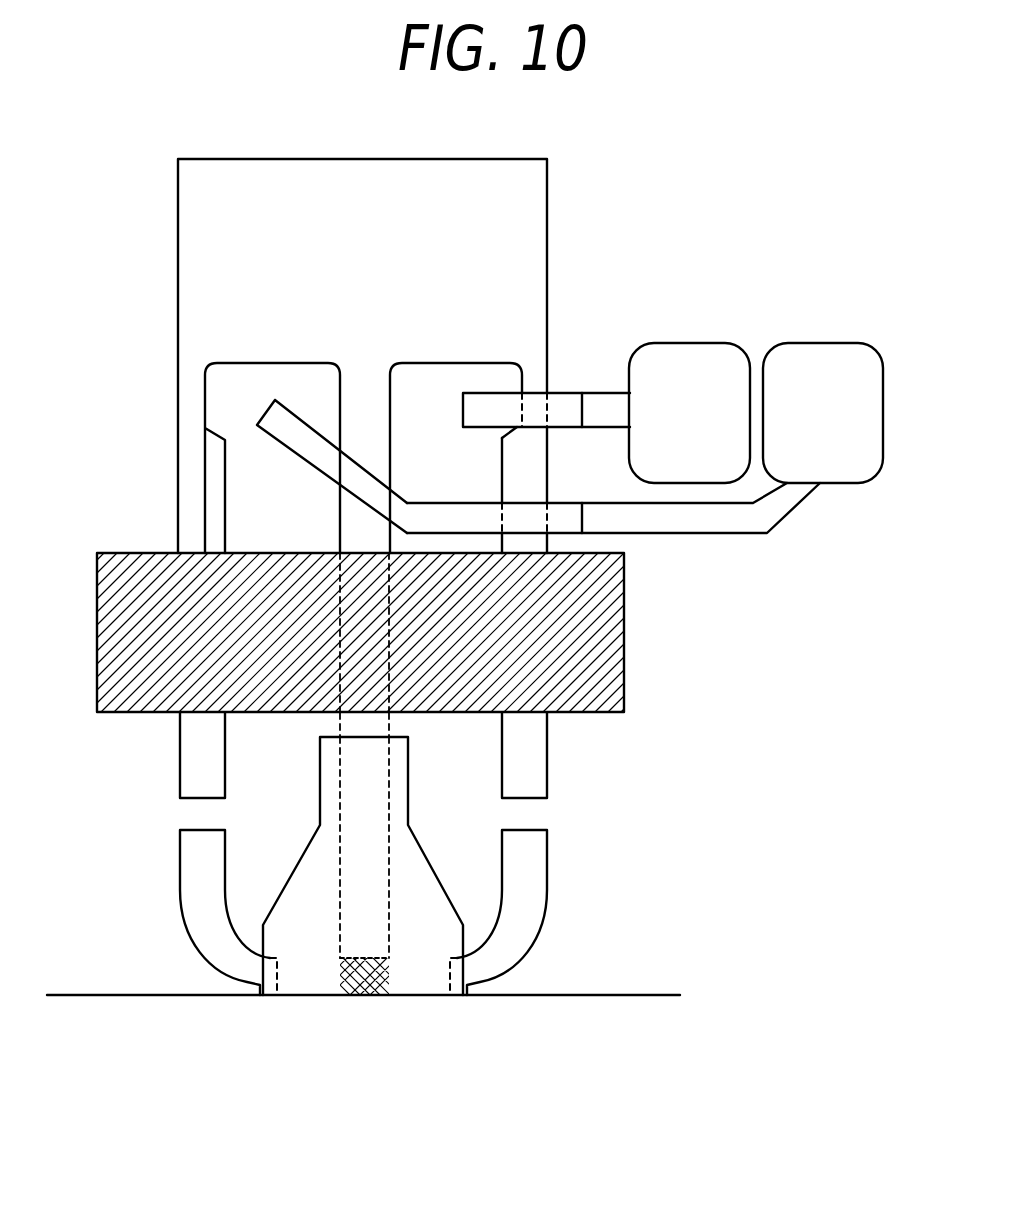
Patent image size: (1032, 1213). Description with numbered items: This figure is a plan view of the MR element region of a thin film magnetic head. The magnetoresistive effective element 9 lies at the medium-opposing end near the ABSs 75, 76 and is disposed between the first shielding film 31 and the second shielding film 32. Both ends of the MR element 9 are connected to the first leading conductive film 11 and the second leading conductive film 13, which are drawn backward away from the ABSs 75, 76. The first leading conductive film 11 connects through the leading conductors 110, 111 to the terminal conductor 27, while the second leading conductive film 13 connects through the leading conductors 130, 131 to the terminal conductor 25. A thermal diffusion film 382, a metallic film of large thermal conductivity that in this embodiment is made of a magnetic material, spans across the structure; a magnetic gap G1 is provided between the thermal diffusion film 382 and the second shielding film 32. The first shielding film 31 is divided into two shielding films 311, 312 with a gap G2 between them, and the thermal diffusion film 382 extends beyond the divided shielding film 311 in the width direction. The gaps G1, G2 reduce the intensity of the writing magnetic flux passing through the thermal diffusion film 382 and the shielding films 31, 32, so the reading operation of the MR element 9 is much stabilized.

The first shielding film 31 is at (175, 378).
The first leading conductive film 11 is at (243, 530).
The second leading conductive film 13 is at (480, 777).
The leading conductor 131 is at (565, 402).
The leading conductor 130 is at (610, 422).
The terminal conductor 25 is at (668, 356).
The terminal conductor 27 is at (808, 358).
The leading conductor 111 is at (570, 517).
The leading conductor 110 is at (750, 520).
The thermal diffusion film 382 is at (605, 663).
The magnetic gap G1 is at (377, 728).
The gap G2 is at (197, 818).
The divided shielding film 311 is at (192, 762).
The divided shielding film 312 is at (528, 852).
The second shielding film 32 is at (315, 900).
The magnetoresistive effective element 9 is at (370, 962).
The ABS 75 is at (642, 997).
The ABS 76 is at (405, 1035).